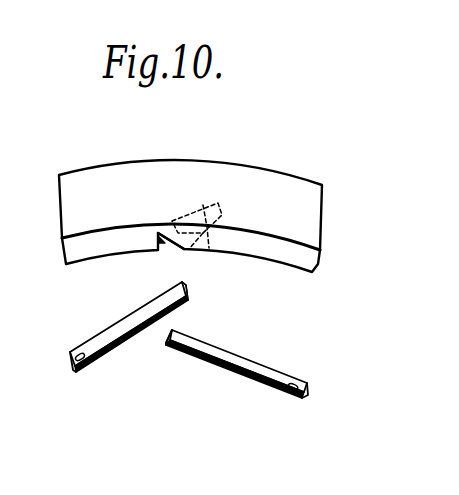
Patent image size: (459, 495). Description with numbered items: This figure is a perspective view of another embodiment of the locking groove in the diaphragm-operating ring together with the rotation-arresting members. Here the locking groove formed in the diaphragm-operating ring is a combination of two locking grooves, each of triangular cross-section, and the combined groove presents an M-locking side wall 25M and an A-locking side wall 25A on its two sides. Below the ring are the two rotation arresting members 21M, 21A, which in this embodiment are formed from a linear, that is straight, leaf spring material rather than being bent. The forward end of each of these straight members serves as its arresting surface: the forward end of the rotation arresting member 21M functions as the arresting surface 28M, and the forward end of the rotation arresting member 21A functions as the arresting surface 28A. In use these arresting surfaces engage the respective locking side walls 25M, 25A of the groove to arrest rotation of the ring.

The A-locking side wall 25A is at (158, 252).
The M-locking side wall 25M is at (209, 248).
The rotation arresting member 21M is at (123, 325).
The rotation arresting member 21A is at (230, 365).
The arresting surface 28M is at (188, 290).
The arresting surface 28A is at (170, 335).